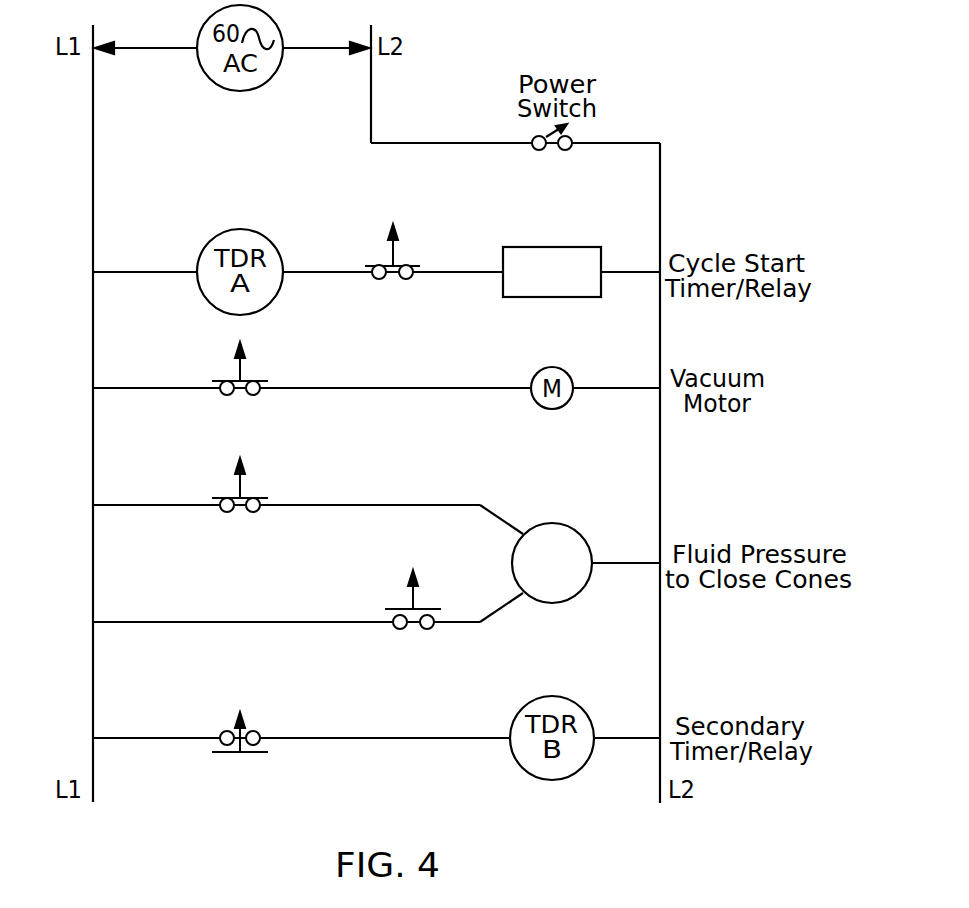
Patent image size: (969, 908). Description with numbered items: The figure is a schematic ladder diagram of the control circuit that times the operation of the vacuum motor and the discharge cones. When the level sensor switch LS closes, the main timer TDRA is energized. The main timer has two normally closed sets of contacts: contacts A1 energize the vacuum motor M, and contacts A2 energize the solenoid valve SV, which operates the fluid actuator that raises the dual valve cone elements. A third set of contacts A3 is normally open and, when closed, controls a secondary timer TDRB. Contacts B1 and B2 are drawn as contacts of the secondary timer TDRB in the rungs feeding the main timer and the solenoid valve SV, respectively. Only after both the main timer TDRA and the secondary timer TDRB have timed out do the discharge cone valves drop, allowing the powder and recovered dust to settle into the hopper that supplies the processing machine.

The normally closed contact of timer/relay B B1 is at (420, 240).
The level sensor switch LS is at (565, 247).
The normally closed TDRA contacts A1 is at (280, 368).
The normally closed TDRA contacts A2 is at (278, 483).
The solenoid valve SV is at (566, 551).
The normally open contact of timer/relay B B2 is at (385, 583).
The third set of contacts A3 is at (272, 717).